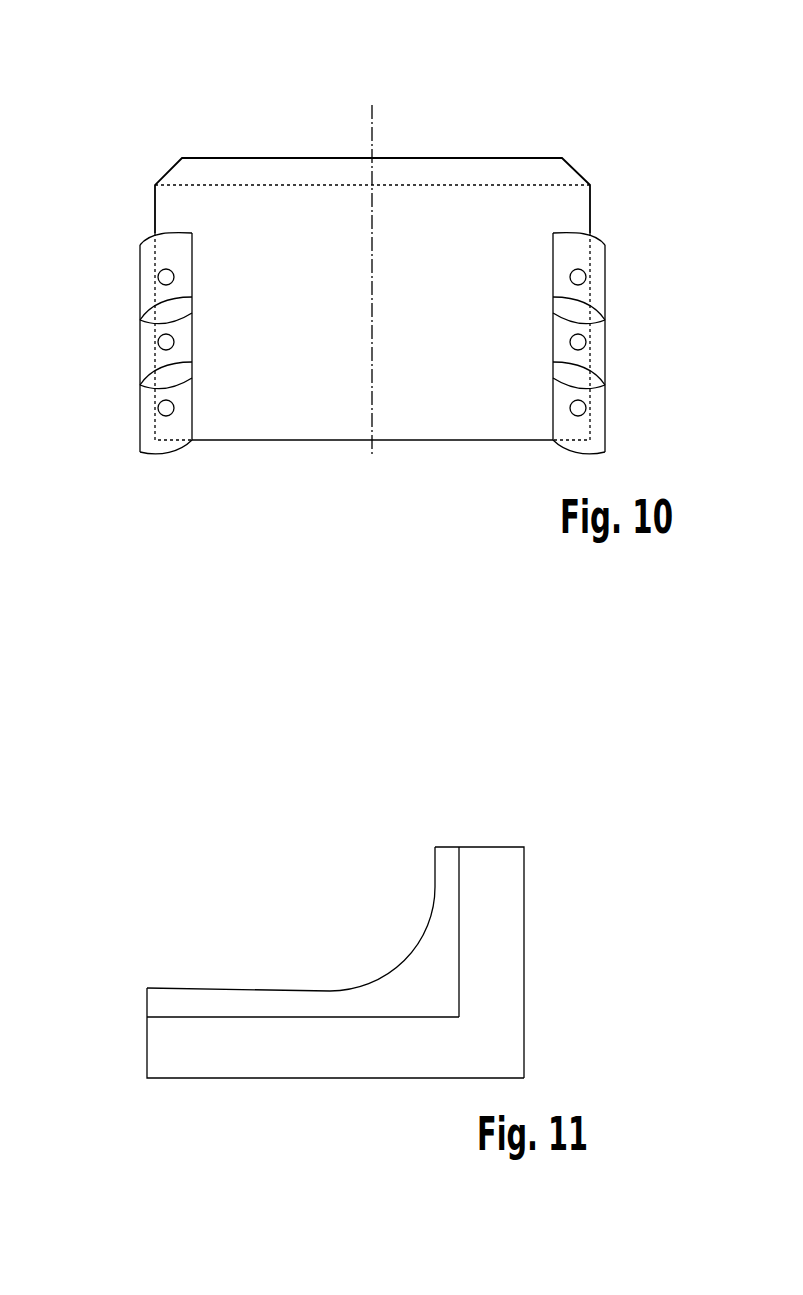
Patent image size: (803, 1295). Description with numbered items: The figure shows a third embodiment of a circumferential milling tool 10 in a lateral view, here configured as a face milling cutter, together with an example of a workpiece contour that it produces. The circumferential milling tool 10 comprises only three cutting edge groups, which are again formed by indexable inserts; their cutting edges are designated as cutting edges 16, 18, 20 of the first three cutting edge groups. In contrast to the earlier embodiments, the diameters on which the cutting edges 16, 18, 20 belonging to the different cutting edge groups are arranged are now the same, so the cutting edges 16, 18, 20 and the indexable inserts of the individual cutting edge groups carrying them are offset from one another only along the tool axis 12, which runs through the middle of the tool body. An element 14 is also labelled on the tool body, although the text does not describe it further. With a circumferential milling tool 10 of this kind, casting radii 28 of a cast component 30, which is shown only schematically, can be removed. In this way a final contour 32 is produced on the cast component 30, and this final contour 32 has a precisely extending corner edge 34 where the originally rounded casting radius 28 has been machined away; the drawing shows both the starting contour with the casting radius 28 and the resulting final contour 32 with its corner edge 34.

In FIG. 10, the circumferential milling tool 10 is at (589, 107).
In FIG. 10, the tool axis 12 is at (372, 121).
In FIG. 10, the housing body 14 is at (510, 170).
In FIG. 10, the cutting edge 16 is at (142, 420).
In FIG. 10, the cutting edge 18 is at (142, 352).
In FIG. 10, the cutting edge 20 is at (142, 281).
In FIG. 11, the casting radius 28 is at (402, 958).
In FIG. 11, the cast component 30 is at (500, 922).
In FIG. 11, the final contour 32 is at (462, 957).
In FIG. 11, the corner edge 34 is at (462, 1013).